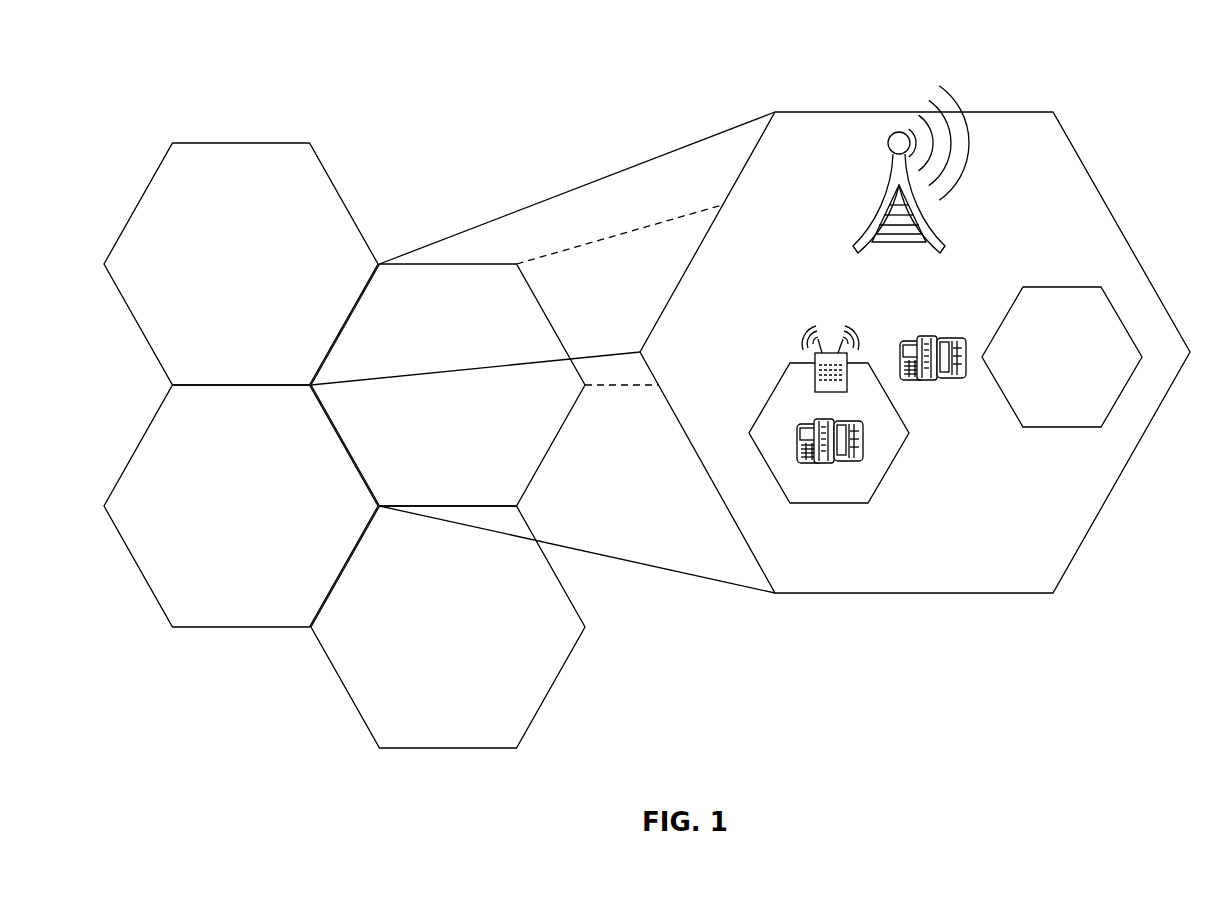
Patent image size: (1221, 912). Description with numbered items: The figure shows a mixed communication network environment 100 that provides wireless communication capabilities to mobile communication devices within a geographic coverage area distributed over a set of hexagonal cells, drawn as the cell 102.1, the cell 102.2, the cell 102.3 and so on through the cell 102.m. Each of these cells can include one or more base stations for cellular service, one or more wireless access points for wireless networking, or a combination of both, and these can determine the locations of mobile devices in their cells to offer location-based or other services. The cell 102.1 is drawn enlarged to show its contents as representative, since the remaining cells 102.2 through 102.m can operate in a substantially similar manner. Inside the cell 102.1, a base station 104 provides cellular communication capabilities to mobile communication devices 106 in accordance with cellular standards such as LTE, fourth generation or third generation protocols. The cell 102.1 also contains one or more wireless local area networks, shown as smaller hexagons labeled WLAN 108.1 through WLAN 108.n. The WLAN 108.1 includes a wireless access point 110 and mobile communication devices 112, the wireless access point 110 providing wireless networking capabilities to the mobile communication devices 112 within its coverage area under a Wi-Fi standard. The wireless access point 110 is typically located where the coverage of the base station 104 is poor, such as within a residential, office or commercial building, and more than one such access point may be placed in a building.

The mixed communication network environment 100 is at (149, 70).
The cell 102.1 is at (865, 111).
The cell 102.2 is at (243, 143).
The cell 102.3 is at (243, 628).
The cell 102.m is at (451, 749).
The base station 104 is at (866, 244).
The mobile communication devices 106 is at (931, 336).
The wireless local area network (WLAN) 108.1 is at (828, 504).
The wireless local area network (WLAN) 108.n is at (1062, 428).
The wireless access point 110 is at (814, 373).
The mobile communication devices 112 is at (795, 453).